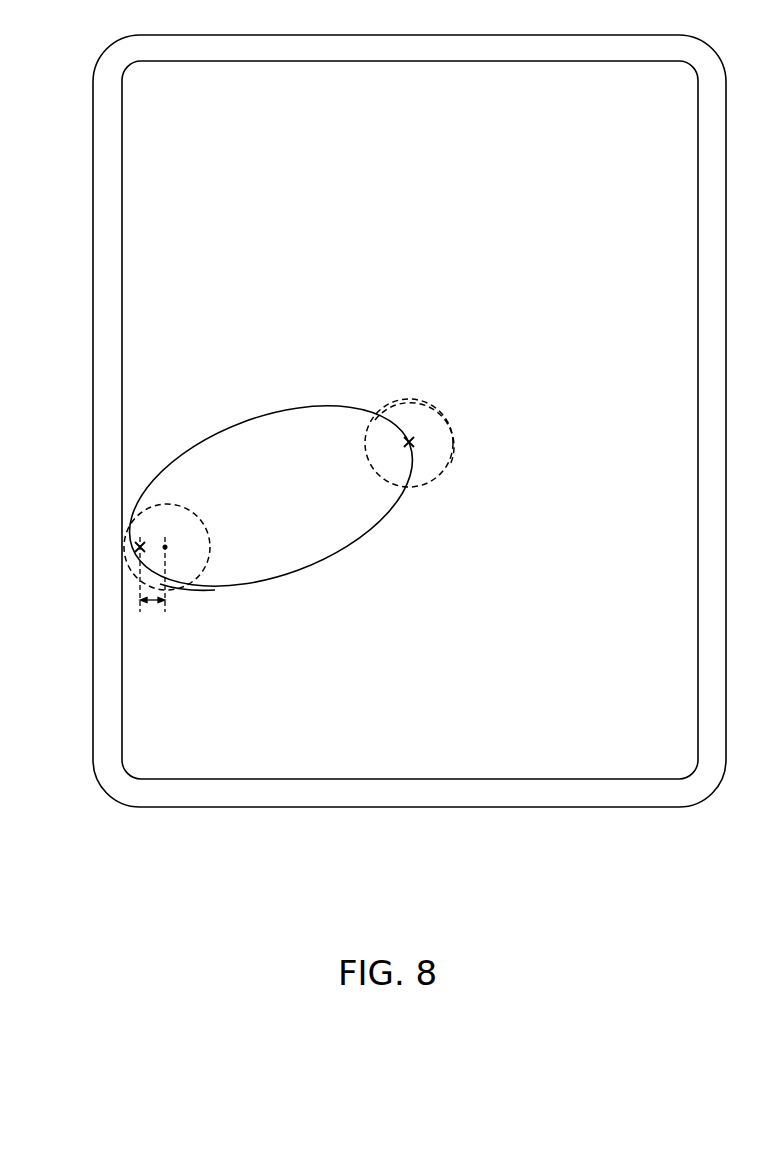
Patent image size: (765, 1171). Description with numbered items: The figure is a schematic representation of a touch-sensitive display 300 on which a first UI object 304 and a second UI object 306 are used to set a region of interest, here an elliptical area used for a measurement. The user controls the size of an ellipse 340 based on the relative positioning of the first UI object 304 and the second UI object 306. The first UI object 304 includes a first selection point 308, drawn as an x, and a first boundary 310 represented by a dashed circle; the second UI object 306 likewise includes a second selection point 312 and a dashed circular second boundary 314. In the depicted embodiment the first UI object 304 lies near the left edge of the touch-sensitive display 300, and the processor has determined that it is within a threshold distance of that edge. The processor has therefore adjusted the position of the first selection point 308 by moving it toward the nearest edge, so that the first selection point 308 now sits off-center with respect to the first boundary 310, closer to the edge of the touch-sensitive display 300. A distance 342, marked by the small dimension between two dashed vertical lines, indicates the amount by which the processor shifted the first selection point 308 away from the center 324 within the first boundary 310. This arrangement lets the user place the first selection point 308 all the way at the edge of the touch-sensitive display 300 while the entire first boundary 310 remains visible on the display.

The touch-sensitive display 300 is at (418, 119).
The first UI object 304 is at (190, 598).
The second UI object 306 is at (430, 385).
The first selection point 308 is at (138, 546).
The first boundary 310 is at (188, 508).
The second selection point 312 is at (409, 437).
The second boundary 314 is at (447, 468).
The center 324 is at (167, 547).
The ellipse 340 is at (333, 556).
The distance 342 is at (150, 601).